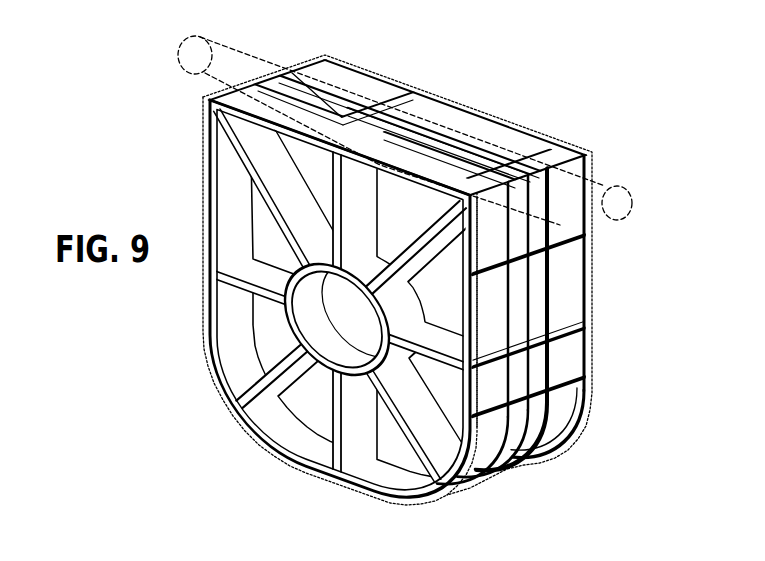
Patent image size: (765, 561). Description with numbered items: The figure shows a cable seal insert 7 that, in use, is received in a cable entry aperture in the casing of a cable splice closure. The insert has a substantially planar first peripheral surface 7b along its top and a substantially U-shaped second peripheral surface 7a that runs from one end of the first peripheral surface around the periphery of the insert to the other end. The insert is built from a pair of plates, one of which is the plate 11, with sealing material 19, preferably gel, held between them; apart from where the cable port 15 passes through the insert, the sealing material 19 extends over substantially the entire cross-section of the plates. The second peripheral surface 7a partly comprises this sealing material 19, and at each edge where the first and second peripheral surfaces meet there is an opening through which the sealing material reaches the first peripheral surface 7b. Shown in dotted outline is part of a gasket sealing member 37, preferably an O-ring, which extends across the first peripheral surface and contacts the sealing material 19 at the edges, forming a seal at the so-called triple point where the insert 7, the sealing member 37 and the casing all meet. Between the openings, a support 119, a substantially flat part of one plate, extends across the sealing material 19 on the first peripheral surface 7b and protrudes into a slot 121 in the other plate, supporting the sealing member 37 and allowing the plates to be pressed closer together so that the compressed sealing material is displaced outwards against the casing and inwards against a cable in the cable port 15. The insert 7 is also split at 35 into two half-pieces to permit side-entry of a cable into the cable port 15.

The cable seal insert 7 is at (184, 184).
The second peripheral surface 7a is at (577, 289).
The first peripheral surface 7b is at (357, 80).
The plate 11 is at (334, 88).
The cable port 15 is at (330, 325).
The sealing material 19 is at (528, 396).
The split 35 is at (528, 344).
The gasket sealing member 37 is at (188, 53).
The support 119 is at (410, 123).
The slot 121 is at (439, 141).